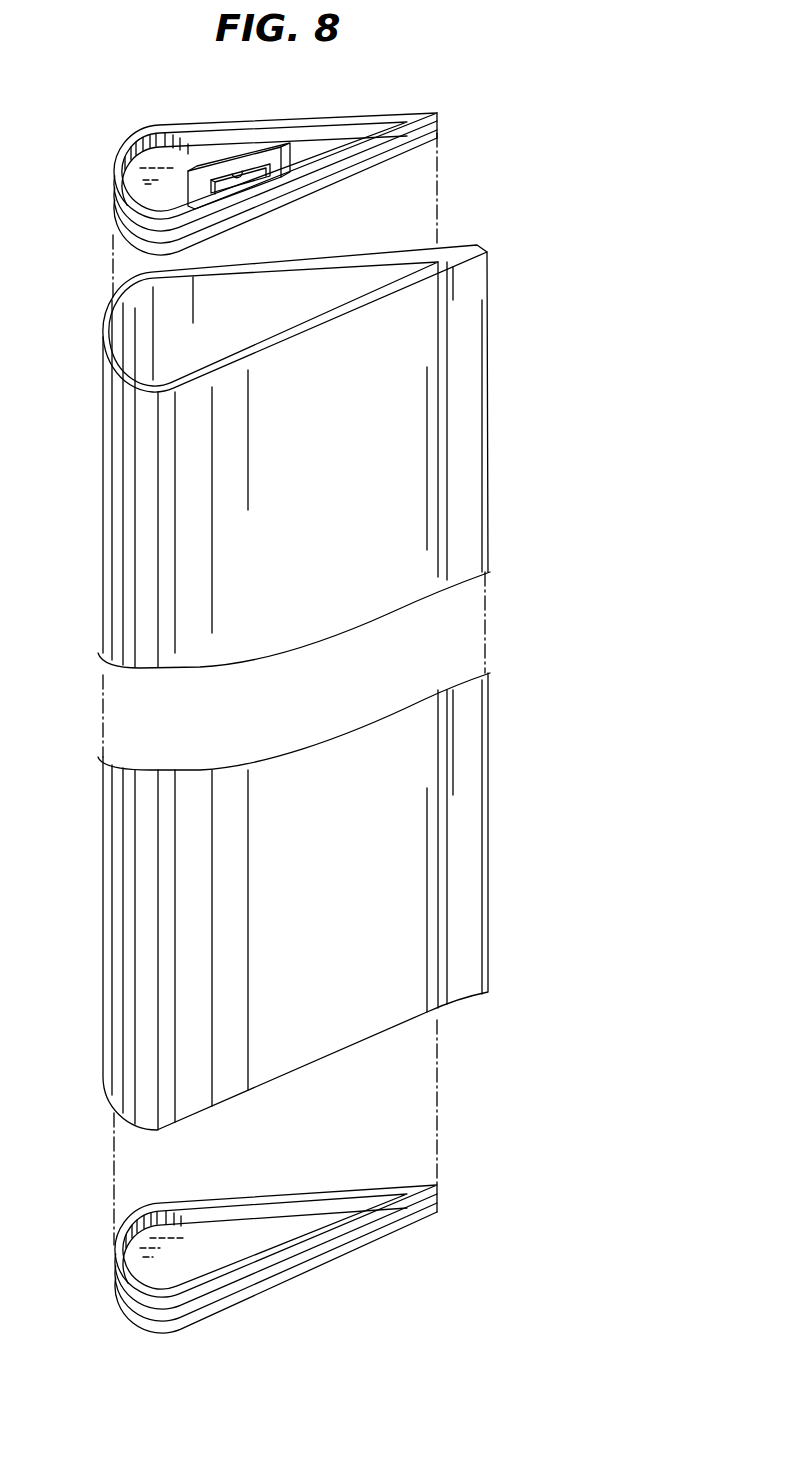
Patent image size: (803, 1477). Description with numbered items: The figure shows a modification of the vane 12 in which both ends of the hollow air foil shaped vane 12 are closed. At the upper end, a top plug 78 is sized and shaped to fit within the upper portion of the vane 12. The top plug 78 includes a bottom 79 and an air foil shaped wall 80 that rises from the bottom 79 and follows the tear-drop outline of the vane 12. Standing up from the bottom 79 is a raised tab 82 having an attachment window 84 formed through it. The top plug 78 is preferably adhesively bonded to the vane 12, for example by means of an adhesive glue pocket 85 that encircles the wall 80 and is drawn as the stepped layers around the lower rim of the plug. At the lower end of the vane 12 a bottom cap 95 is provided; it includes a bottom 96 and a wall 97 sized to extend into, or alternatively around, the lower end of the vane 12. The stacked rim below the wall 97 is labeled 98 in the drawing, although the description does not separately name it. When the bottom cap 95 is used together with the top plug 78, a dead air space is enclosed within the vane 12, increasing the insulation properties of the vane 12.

The vane 12 is at (124, 632).
The top plug 78 is at (270, 158).
The bottom 79 is at (175, 173).
The air foil shaped wall 80 is at (138, 143).
The raised tab 82 is at (251, 137).
The attachment window 84 is at (246, 170).
The adhesive glue pocket 85 is at (263, 210).
The bottom cap 95 is at (248, 1247).
The bottom 96 is at (187, 1243).
The wall 97 is at (232, 1197).
The bottom cap flange 98 is at (287, 1277).